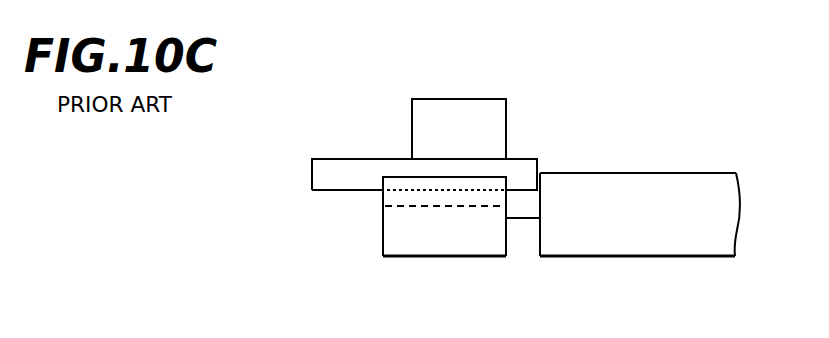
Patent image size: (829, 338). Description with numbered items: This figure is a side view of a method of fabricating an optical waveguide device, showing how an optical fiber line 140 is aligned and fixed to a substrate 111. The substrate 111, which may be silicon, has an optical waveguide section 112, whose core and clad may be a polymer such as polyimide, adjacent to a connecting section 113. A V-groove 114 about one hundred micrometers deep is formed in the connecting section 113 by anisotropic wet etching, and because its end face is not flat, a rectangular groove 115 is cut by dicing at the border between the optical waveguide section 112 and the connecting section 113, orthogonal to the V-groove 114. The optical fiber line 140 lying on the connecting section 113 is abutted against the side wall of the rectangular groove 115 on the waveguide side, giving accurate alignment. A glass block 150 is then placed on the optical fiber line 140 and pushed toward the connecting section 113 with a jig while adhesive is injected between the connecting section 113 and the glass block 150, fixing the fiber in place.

The substrate 111 is at (712, 237).
The optical waveguide section 112 is at (658, 172).
The connecting section 113 is at (397, 176).
The V-groove 114 is at (430, 207).
The rectangular groove 115 is at (527, 219).
The optical fiber line 140 is at (328, 158).
The glass block 150 is at (474, 98).